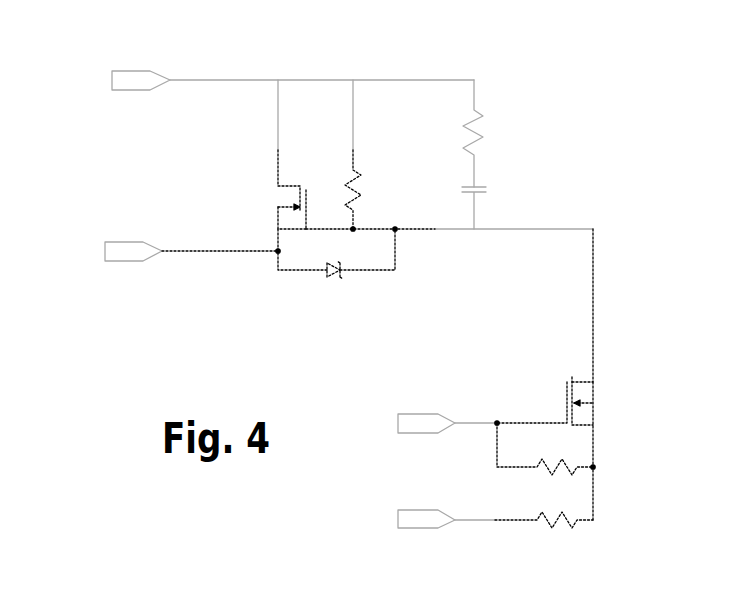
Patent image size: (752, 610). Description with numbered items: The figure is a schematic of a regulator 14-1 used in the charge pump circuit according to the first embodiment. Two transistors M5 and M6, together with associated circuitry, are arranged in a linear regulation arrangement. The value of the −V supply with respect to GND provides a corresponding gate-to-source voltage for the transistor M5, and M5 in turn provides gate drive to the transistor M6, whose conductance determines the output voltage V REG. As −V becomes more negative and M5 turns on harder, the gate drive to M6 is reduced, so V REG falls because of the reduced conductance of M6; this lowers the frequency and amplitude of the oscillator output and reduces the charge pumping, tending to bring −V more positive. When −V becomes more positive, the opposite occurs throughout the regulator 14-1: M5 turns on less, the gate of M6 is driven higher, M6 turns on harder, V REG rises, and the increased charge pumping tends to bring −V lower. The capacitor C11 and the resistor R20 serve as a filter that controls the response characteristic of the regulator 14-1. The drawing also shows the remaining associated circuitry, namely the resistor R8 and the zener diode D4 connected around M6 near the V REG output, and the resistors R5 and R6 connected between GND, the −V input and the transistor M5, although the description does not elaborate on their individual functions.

The regulator 14-1 is at (160, 346).
The resistor R20 is at (501, 133).
The capacitor C11 is at (508, 204).
The transistor M6 is at (244, 189).
The resistor 200K R8 is at (377, 189).
The zener diode BZX84C10L D4 is at (332, 269).
The transistor M5 is at (593, 374).
The resistor 2.49K R5 is at (545, 458).
The resistor 4K R6 is at (544, 519).